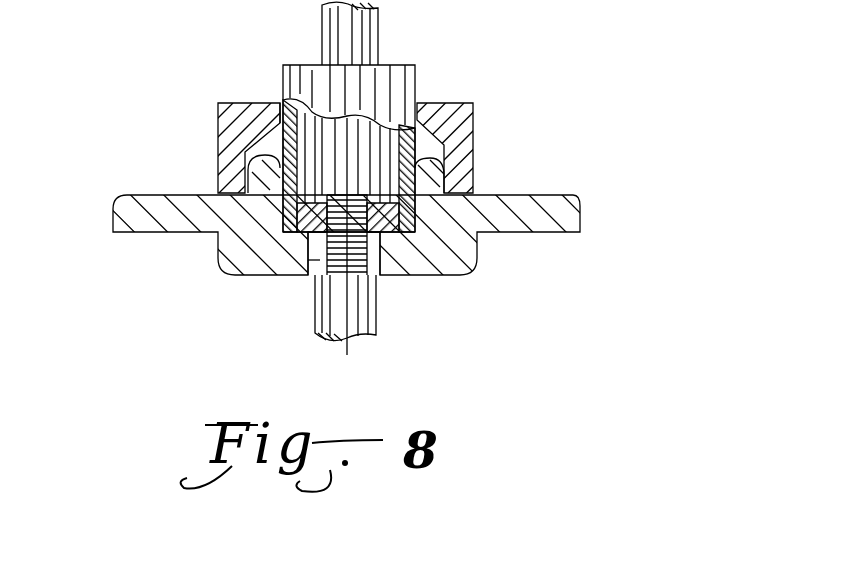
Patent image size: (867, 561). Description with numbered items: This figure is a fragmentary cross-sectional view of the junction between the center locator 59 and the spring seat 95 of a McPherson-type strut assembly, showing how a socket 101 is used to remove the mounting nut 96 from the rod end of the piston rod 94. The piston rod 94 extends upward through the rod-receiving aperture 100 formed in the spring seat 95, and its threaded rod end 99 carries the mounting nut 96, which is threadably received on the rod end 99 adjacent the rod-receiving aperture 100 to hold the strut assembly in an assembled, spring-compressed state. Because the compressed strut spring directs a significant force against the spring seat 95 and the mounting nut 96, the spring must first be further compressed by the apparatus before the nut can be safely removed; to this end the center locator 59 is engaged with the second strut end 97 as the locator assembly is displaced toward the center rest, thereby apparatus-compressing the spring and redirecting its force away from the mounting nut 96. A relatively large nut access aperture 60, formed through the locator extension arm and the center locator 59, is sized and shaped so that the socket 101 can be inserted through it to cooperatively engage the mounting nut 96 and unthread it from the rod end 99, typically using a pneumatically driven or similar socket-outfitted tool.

The center locator 59 is at (228, 137).
The nut access aperture 60 is at (276, 96).
The piston rod 94 is at (377, 323).
The spring seat 95 is at (573, 195).
The mounting nut 96 is at (440, 172).
The second strut end 97 is at (447, 140).
The threaded rod end 99 is at (372, 252).
The rod-receiving aperture 100 is at (312, 262).
The socket 101 is at (380, 75).